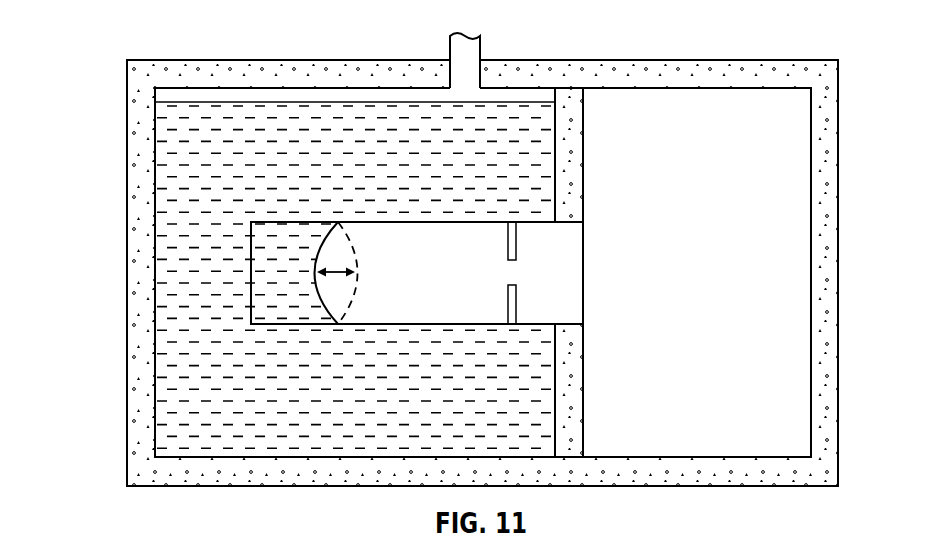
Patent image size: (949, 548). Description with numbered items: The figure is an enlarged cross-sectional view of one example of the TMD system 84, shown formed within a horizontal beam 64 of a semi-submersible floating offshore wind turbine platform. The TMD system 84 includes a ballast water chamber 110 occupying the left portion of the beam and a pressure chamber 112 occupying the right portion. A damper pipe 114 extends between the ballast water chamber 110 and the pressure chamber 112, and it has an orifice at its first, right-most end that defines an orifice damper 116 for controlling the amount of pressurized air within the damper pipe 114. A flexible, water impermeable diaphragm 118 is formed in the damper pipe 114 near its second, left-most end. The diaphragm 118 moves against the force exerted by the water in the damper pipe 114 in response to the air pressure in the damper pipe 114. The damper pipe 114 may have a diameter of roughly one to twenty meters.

The horizontal beam 64 is at (828, 78).
The TMD system 84 is at (232, 38).
The ballast water chamber 110 is at (309, 440).
The pressure chamber 112 is at (777, 363).
The damper pipe 114 is at (543, 325).
The orifice damper 116 is at (510, 285).
The diaphragm 118 is at (313, 262).